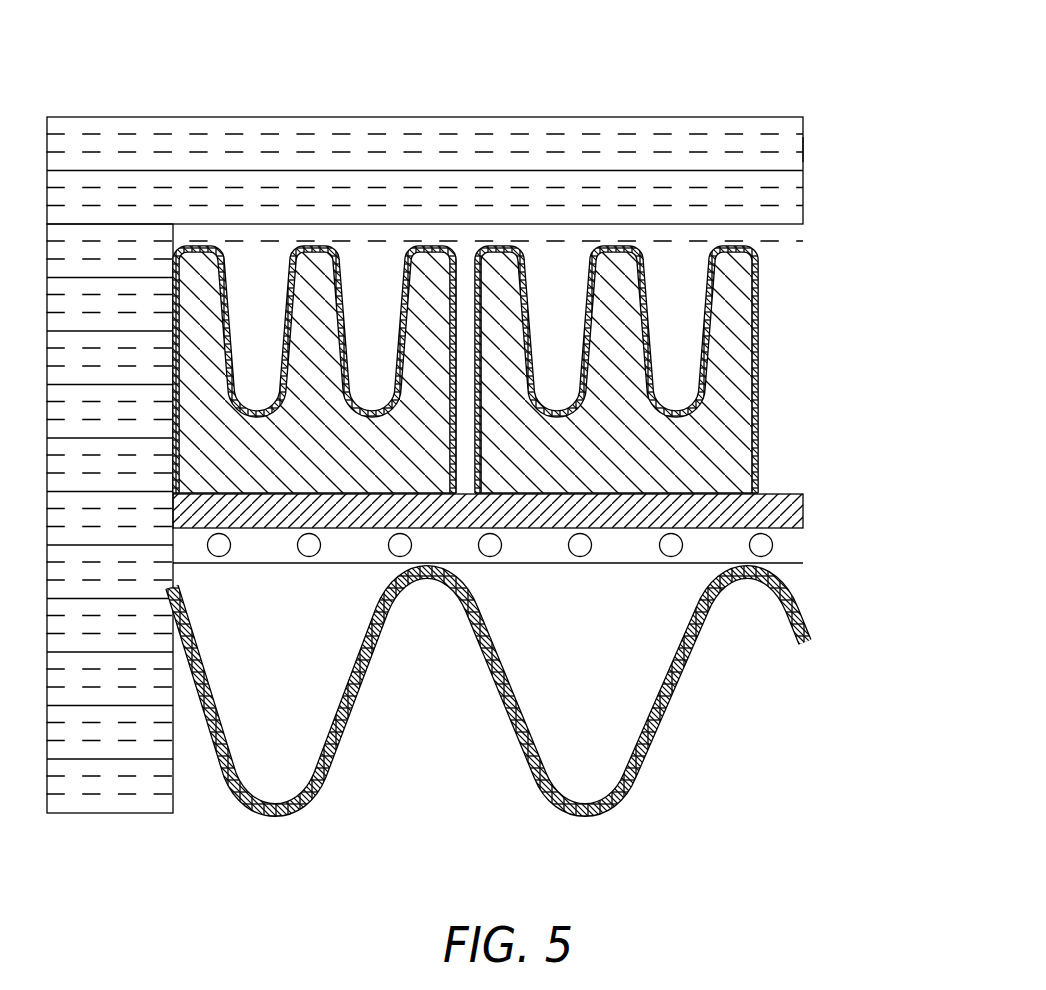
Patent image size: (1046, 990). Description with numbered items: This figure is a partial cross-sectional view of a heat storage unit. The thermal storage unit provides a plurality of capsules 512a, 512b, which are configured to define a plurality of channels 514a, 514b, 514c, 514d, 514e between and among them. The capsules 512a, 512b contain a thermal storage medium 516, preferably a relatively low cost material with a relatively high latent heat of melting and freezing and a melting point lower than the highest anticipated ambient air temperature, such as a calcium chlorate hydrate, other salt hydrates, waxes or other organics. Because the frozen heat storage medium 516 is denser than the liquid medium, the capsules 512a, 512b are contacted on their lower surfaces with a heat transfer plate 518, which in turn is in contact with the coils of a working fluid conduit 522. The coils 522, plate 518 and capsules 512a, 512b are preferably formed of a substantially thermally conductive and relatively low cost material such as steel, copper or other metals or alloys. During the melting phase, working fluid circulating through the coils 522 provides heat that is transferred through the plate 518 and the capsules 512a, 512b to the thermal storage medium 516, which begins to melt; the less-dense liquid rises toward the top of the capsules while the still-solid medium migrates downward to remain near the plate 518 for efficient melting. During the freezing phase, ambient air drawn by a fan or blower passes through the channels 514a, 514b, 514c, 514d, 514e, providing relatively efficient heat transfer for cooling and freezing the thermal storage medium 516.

The capsule 512a is at (447, 438).
The capsule 512b is at (758, 430).
The channel 514a is at (240, 325).
The channel 514b is at (373, 297).
The channel 514c is at (468, 257).
The channel 514d is at (560, 302).
The channel 514e is at (678, 310).
The thermal storage medium 516 is at (278, 466).
The heat transfer plate 518 is at (803, 513).
The working fluid conduit coils 522 is at (225, 551).